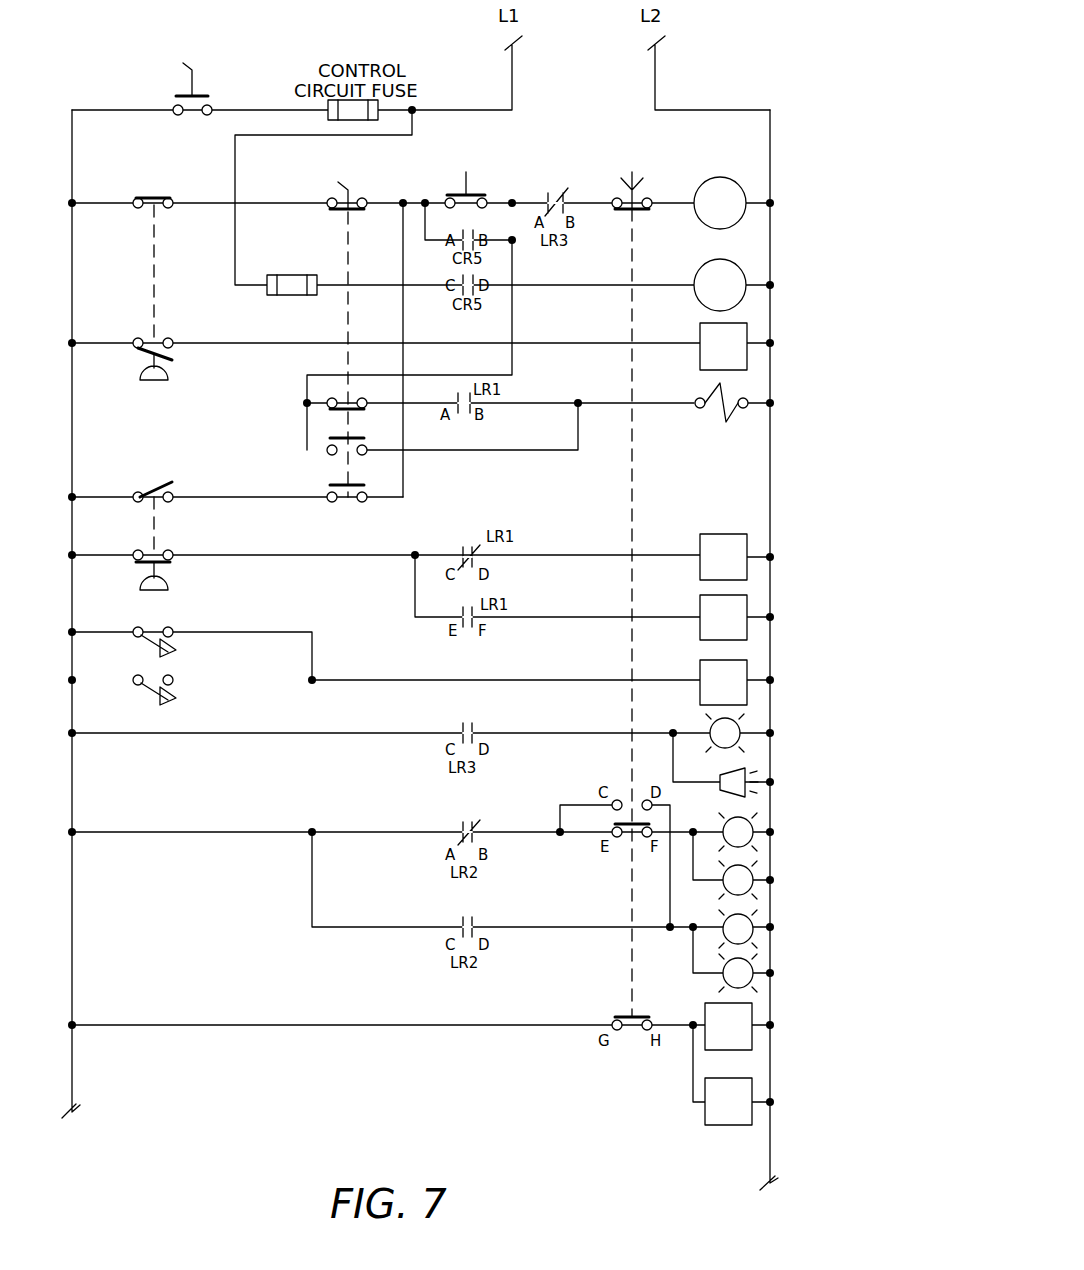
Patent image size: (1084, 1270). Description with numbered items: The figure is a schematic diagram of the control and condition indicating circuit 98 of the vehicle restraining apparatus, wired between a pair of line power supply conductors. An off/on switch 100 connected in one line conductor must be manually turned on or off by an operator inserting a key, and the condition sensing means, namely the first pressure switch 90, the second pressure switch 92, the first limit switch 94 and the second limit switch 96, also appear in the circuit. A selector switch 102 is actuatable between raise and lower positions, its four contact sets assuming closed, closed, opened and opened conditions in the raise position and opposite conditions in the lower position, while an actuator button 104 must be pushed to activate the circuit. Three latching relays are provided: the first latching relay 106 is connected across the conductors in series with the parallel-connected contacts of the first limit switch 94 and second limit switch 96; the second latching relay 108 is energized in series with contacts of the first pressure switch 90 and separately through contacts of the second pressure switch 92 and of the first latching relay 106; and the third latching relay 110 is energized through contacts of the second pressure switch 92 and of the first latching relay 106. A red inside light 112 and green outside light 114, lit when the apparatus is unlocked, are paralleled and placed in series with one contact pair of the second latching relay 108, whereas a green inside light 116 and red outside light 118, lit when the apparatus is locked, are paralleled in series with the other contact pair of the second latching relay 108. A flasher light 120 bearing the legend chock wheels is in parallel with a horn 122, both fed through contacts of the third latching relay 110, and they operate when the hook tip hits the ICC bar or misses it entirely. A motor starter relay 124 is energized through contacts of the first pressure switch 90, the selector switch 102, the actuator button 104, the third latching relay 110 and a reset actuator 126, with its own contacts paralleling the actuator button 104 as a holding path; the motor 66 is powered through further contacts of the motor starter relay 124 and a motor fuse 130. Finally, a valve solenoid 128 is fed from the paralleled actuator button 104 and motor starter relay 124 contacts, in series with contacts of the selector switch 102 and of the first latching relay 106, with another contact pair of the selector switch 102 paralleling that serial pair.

The control and condition indicating circuit 98 is at (769, 66).
The off/on switch 100 is at (200, 93).
The PS1 90 is at (136, 200).
The PS2 92 is at (136, 495).
The LS1 94 is at (148, 646).
The LS2 96 is at (148, 694).
The selector switch 102 is at (330, 200).
The motor fuse 130 is at (290, 295).
The actuator button 104 is at (482, 192).
The reset actuator 126 is at (640, 190).
The motor starter relay CR5 124 is at (700, 224).
The motor 66 is at (700, 297).
The second latching relay LR2 108 is at (700, 352).
The valve solenoid 128 is at (718, 412).
The third latching relay LR3 110 is at (700, 605).
The first latching relay LR1 106 is at (702, 668).
The flasher light 120 is at (714, 722).
The horn 122 is at (740, 797).
The red inside light 112 is at (742, 845).
The green outside light 114 is at (748, 885).
The green inside light 116 is at (726, 918).
The red outside light 118 is at (723, 977).